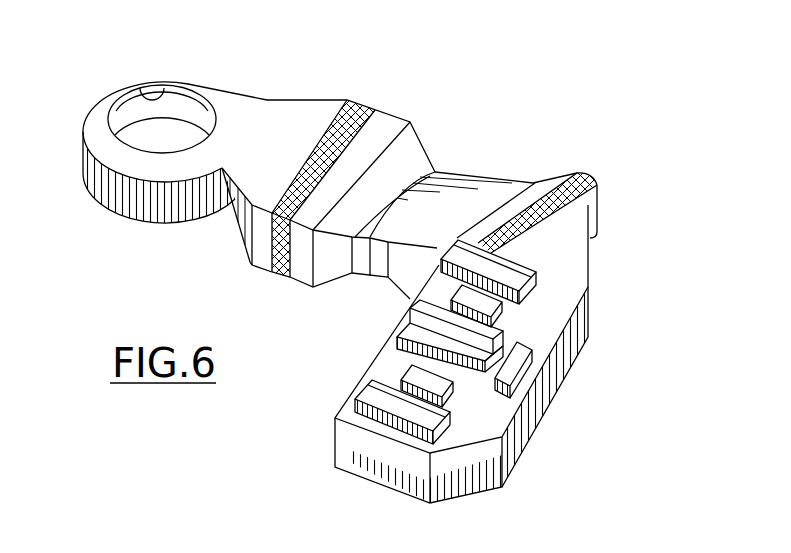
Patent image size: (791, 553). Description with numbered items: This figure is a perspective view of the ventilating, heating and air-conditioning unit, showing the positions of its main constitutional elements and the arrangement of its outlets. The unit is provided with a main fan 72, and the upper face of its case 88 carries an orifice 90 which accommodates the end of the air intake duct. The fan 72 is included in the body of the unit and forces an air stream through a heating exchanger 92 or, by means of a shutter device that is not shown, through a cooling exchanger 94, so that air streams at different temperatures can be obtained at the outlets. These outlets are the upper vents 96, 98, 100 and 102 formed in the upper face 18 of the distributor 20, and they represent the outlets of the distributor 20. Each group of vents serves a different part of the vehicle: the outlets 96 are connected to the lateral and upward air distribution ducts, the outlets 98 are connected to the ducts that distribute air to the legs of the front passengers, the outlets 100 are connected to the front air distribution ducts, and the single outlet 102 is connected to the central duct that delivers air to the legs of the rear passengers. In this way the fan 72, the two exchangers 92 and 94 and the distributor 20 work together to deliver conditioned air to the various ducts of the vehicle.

The upper face 18 is at (576, 260).
The distributor 20 is at (555, 367).
The main fan 72 is at (232, 90).
The case 88 is at (100, 120).
The orifice 90 is at (170, 84).
The heating exchanger 92 is at (365, 112).
The cooling exchanger 94 is at (592, 181).
The upper vents 96 is at (540, 286).
The upper vents 98 is at (505, 310).
The upper vents 100 is at (400, 318).
The upper vent 102 is at (545, 395).